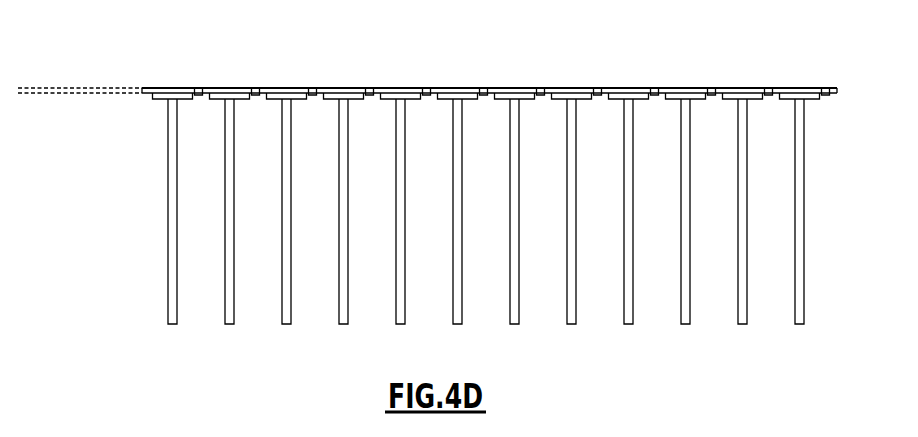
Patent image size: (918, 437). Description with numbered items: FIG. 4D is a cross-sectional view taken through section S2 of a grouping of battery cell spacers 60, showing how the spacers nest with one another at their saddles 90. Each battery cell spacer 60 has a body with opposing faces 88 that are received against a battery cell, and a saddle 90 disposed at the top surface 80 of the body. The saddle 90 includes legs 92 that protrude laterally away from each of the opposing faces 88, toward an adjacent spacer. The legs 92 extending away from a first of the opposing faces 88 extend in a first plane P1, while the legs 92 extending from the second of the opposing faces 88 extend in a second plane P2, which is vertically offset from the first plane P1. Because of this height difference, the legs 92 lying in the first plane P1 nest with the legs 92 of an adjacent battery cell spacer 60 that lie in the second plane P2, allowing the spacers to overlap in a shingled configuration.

The saddle 90 is at (468, 83).
The legs 92 is at (148, 88).
The first plane P1 is at (41, 88).
The second plane P2 is at (53, 93).
The section S2 is at (83, 193).
The top surface 80 is at (168, 213).
The opposing faces 88 is at (177, 225).
The battery cell spacer 60 is at (798, 118).